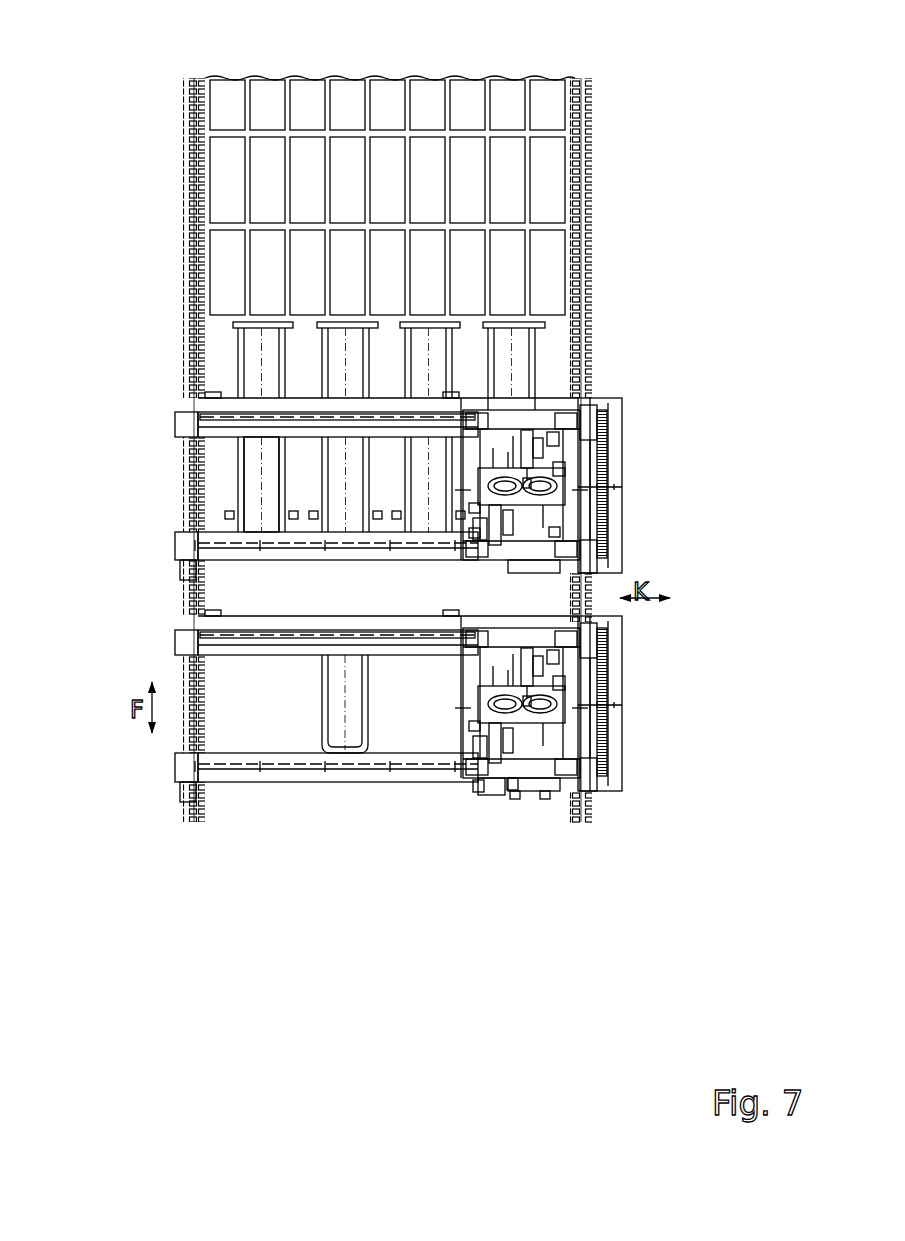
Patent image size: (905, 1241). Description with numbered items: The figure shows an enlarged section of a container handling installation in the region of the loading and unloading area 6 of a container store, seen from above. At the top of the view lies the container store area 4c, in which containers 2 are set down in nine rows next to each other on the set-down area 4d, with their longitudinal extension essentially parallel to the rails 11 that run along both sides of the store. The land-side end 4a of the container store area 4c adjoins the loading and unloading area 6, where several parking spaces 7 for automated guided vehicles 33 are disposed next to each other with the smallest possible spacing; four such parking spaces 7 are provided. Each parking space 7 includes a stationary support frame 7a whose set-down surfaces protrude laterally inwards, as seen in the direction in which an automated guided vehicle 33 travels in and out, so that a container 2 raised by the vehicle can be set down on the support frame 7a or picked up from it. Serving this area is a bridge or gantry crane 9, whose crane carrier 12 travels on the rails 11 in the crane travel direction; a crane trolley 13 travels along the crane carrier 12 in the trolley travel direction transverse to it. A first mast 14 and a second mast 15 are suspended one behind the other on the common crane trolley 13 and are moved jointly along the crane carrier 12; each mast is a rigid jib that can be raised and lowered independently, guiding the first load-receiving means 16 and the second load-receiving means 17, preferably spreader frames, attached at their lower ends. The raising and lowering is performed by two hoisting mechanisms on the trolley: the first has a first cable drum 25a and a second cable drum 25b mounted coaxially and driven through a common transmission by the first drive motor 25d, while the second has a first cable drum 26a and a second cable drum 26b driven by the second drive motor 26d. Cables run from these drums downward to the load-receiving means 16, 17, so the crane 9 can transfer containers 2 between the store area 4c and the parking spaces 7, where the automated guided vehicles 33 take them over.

The container 2 is at (500, 178).
The land-side end 4a is at (235, 318).
The container store area 4c is at (389, 178).
The set-down area 4d is at (283, 135).
The loading and unloading area 6 is at (332, 797).
The parking space 7 is at (255, 488).
The support frame 7a is at (245, 500).
The bridge or gantry crane 9 is at (622, 485).
The rail 11 is at (205, 80).
The crane carrier 12 is at (225, 430).
The crane trolley 13 is at (515, 790).
The first mast 14 is at (533, 700).
The second mast 15 is at (498, 700).
The first load-receiving means 16 is at (545, 790).
The second load-receiving means 17 is at (497, 795).
The first cable drum 25a is at (553, 462).
The second cable drum 25b is at (525, 437).
The first drive motor 25d is at (560, 475).
The first cable drum 26a is at (555, 532).
The second cable drum 26b is at (475, 533).
The second drive motor 26d is at (475, 508).
The automated guided vehicle 33 is at (352, 728).